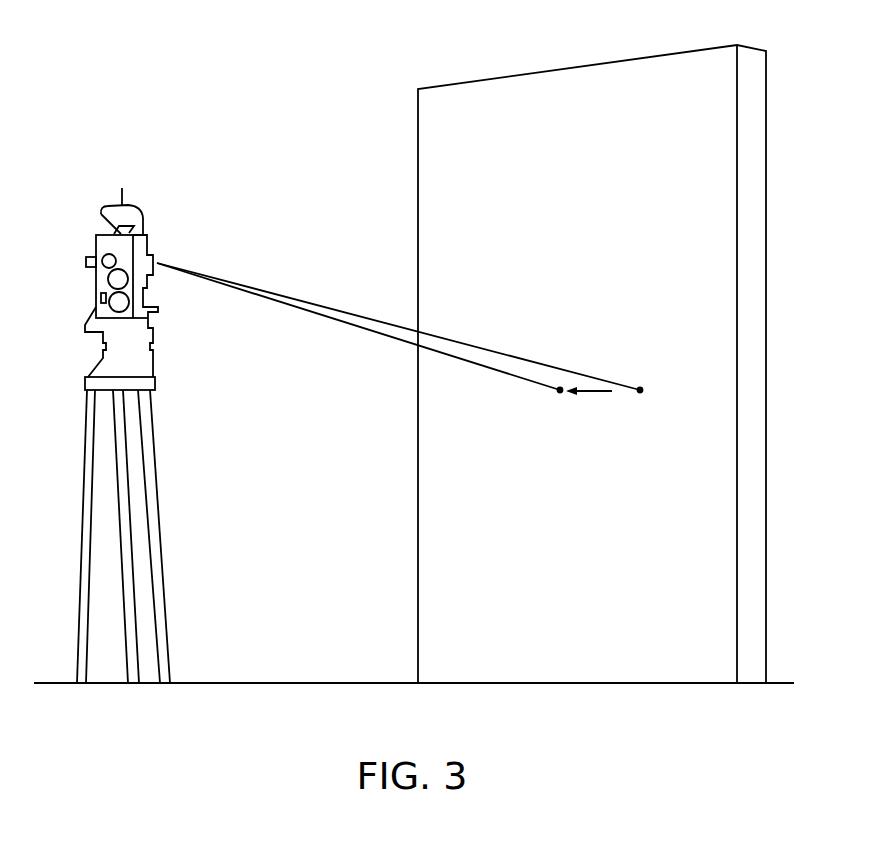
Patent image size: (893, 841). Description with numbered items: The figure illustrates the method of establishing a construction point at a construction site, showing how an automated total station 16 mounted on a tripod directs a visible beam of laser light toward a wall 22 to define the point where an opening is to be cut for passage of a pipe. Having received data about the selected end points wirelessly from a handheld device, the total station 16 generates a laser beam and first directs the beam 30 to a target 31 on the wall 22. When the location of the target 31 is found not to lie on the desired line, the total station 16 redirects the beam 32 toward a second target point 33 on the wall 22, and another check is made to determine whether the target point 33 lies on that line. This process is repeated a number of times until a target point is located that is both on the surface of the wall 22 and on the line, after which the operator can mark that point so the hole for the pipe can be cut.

The automated total station 16 is at (182, 288).
The wall 22 is at (756, 128).
The beam 30 is at (514, 354).
The target 31 is at (641, 385).
The beam 32 is at (488, 368).
The target point 33 is at (559, 395).